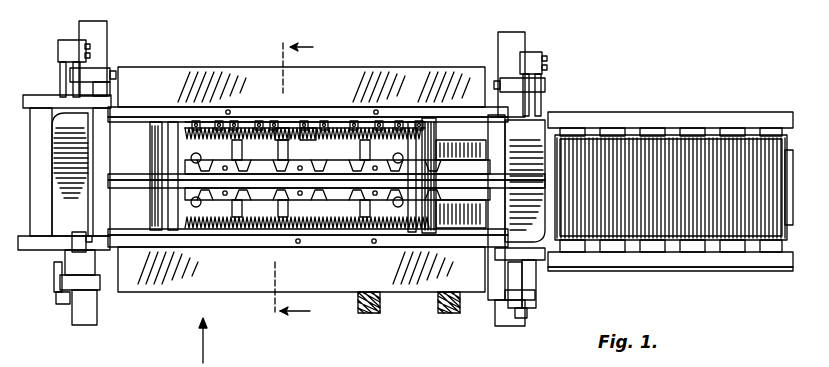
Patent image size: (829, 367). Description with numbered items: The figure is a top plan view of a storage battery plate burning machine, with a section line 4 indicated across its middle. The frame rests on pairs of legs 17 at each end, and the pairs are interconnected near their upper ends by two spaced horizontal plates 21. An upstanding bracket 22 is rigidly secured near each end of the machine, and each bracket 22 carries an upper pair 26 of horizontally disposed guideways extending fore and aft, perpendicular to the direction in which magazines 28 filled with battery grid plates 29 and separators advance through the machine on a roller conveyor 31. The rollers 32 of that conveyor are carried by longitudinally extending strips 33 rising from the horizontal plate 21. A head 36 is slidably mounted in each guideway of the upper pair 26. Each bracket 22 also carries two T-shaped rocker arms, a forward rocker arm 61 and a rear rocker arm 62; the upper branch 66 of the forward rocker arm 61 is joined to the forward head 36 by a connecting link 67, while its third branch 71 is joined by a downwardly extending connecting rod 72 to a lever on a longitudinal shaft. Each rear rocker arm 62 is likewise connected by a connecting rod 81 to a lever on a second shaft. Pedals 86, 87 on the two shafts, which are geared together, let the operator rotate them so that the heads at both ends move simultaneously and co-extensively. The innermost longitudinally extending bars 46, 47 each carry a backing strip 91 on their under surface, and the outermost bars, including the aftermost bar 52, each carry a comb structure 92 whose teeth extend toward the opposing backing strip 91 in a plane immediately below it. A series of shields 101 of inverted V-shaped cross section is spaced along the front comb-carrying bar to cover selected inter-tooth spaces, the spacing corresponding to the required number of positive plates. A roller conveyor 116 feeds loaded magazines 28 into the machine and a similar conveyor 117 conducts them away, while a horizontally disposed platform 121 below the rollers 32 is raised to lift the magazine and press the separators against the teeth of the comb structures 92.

The legs 17 is at (106, 30).
The horizontal plates 21 is at (152, 228).
The upstanding bracket 22 is at (108, 93).
The upper pair of guideways 26 is at (92, 224).
The magazines 28 is at (694, 132).
The battery grid plates 29 is at (652, 128).
The roller conveyor 31 is at (528, 122).
The rollers 32 is at (434, 134).
The longitudinally extending strips 33 is at (414, 135).
The head 36 is at (97, 280).
The innermost longitudinally extending bar 46 is at (464, 196).
The innermost longitudinally extending bar 47 is at (476, 146).
The outermost bar 52 is at (322, 128).
The forward rocker arm 61 is at (62, 306).
The rear rocker arm 62 is at (78, 60).
The upper branch 66 is at (70, 260).
The connecting link 67 is at (74, 242).
The third branch 71 is at (534, 302).
The connecting rod 72 is at (536, 282).
The connecting rod 81 is at (526, 78).
The pedal 86 is at (368, 314).
The pedal 87 is at (444, 314).
The backing strip 91 is at (286, 118).
The comb structure 92 is at (204, 123).
The shields 101 is at (309, 120).
The roller conveyor 116 is at (728, 267).
The conveyor 117 is at (46, 100).
The platform 121 is at (188, 148).
The section line 4 is at (305, 183).